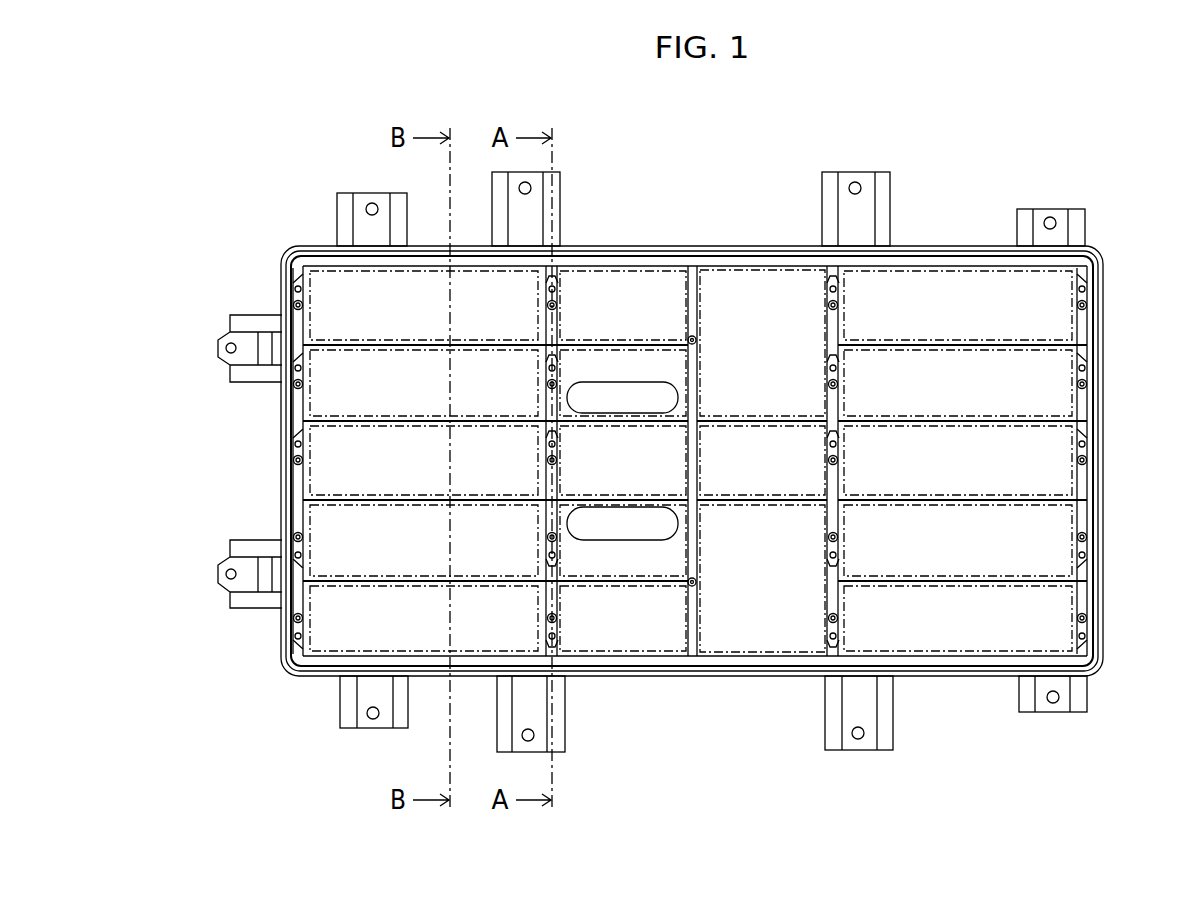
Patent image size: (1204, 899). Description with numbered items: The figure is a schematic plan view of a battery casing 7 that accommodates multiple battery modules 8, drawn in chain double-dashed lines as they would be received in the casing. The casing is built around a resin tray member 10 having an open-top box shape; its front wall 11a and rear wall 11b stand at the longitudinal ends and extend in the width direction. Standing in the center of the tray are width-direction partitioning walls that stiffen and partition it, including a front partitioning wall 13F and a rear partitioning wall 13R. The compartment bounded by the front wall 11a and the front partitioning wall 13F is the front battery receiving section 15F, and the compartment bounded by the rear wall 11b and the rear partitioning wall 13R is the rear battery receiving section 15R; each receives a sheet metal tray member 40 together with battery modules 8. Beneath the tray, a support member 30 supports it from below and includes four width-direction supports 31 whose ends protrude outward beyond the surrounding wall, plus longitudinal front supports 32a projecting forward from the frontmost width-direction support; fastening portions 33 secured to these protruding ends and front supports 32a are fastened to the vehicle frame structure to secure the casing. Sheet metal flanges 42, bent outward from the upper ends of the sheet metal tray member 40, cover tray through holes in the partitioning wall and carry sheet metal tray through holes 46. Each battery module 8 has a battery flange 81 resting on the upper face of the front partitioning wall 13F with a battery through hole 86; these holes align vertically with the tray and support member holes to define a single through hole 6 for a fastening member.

The battery casing 7 is at (275, 218).
The tray member 10 is at (1115, 251).
The battery module 8 is at (472, 267).
The front wall 11a is at (297, 268).
The rear wall 11b is at (1088, 338).
The front partitioning wall 13F is at (557, 512).
The rear partitioning wall 13R is at (827, 597).
The front battery receiving section 15F is at (430, 630).
The rear battery receiving section 15R is at (972, 631).
The through hole 6 is at (557, 383).
The support member 30 is at (1028, 728).
The width-direction support 31 is at (400, 729).
The front support 32a is at (232, 322).
The fastening portion 33 is at (218, 348).
The sheet metal tray member 40 is at (302, 418).
The sheet metal flange 42 is at (557, 288).
The sheet metal tray through hole 46 is at (1088, 555).
The battery flange 81 is at (557, 310).
The battery through hole 86 is at (1092, 378).